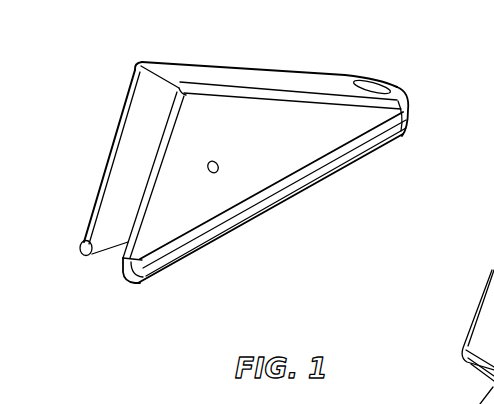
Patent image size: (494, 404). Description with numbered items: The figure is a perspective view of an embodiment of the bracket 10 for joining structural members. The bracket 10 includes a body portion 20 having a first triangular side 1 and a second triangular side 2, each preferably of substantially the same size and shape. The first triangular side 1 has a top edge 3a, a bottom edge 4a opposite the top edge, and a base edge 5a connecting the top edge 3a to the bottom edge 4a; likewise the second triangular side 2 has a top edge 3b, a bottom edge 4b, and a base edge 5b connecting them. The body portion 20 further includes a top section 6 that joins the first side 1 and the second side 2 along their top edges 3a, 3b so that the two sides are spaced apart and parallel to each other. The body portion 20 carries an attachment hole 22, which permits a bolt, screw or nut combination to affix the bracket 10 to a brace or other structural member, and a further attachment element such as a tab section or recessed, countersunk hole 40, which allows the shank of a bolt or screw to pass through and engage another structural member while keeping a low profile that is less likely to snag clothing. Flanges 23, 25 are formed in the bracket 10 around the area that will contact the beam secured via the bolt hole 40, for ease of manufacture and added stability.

The first triangular side 1 is at (103, 128).
The second triangular side 2 is at (165, 289).
The top edge 3a is at (187, 59).
The top edge 3b is at (295, 91).
The bottom edge 4a is at (100, 262).
The bottom edge 4b is at (170, 270).
The base edge 5a is at (93, 238).
The base edge 5b is at (170, 156).
The top section 6 is at (248, 74).
The bracket 10 is at (401, 149).
The body portion 20 is at (276, 149).
The attachment hole 22 is at (219, 172).
The flange 23 is at (218, 242).
The flange 25 is at (84, 255).
The tab section or countersunk hole 40 is at (383, 91).